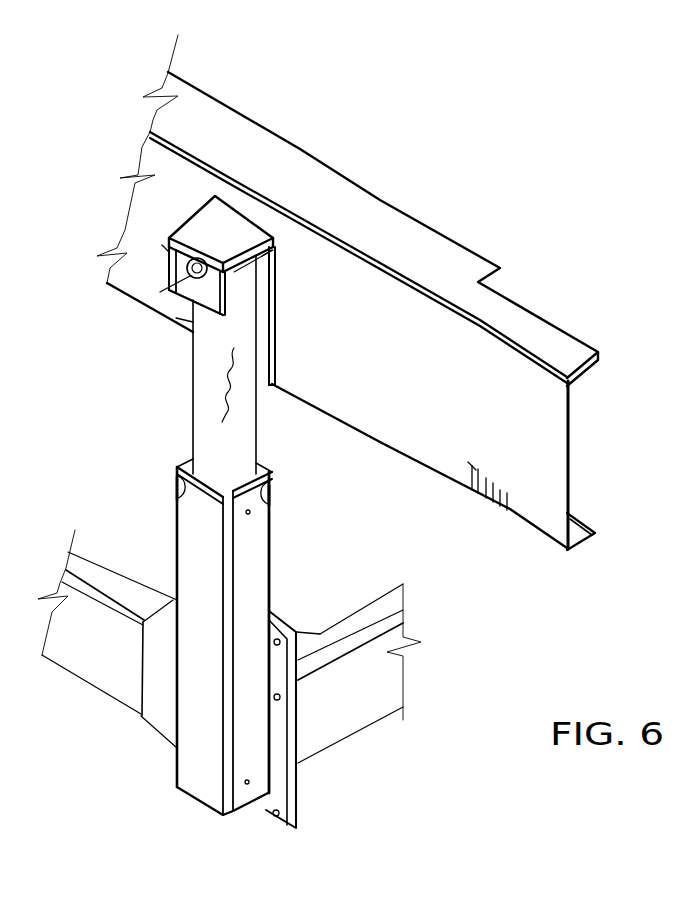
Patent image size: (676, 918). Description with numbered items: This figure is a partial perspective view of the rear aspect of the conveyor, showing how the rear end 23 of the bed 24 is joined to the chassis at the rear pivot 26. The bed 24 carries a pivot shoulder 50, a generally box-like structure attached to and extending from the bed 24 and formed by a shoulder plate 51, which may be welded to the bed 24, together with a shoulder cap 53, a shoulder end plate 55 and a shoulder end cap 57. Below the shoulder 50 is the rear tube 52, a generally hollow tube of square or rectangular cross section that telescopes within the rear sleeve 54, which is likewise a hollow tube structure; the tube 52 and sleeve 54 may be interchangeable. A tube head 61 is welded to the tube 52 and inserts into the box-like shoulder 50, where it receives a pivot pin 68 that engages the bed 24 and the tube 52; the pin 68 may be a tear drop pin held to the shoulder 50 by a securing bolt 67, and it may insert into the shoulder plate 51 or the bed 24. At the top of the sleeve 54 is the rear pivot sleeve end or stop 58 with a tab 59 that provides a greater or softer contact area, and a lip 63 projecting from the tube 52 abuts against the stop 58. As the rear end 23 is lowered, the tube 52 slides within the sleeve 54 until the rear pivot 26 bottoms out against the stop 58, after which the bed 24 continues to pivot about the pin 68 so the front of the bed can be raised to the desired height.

The rear end 23 is at (347, 290).
The bed 24 is at (470, 395).
The rear pivot 26 is at (312, 190).
The pivot shoulder 50 is at (209, 251).
The shoulder plate 51 is at (266, 312).
The rear tube 52 is at (252, 365).
The shoulder cap 53 is at (224, 242).
The rear sleeve 54 is at (229, 643).
The shoulder end plate 55 is at (172, 262).
The shoulder end cap 57 is at (168, 250).
The stop 58 is at (176, 493).
The tab 59 is at (272, 488).
The tube head 61 is at (270, 246).
The lip 63 is at (231, 373).
The securing bolt 67 is at (190, 326).
The pivot pin 68 is at (160, 292).